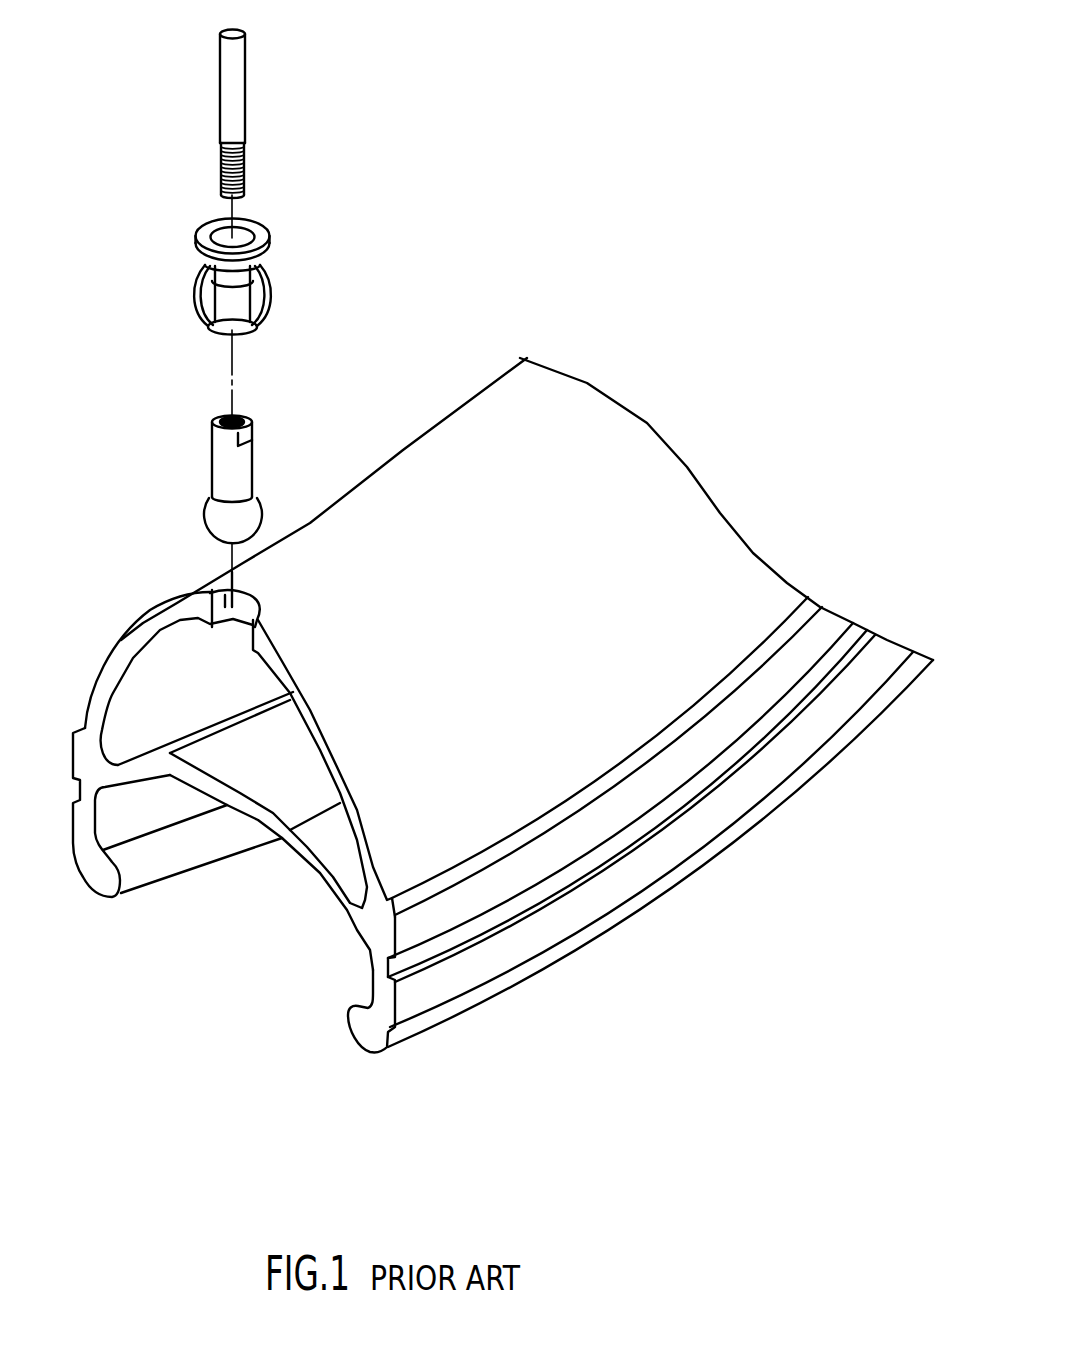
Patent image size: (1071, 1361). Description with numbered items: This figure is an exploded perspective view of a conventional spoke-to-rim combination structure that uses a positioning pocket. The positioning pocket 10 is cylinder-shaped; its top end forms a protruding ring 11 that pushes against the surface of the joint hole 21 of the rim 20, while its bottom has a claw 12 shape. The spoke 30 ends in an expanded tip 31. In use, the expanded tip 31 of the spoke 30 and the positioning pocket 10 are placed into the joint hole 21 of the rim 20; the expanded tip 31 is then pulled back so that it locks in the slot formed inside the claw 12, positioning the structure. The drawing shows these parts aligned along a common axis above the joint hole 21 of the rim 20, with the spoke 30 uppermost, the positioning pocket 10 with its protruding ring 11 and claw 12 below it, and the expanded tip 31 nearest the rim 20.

The positioning pocket 10 is at (183, 237).
The protruding ring 11 is at (270, 240).
The claw 12 is at (197, 289).
The rim 20 is at (492, 663).
The joint hole 21 is at (221, 592).
The spoke 30 is at (233, 82).
The expanded tip 31 is at (240, 522).